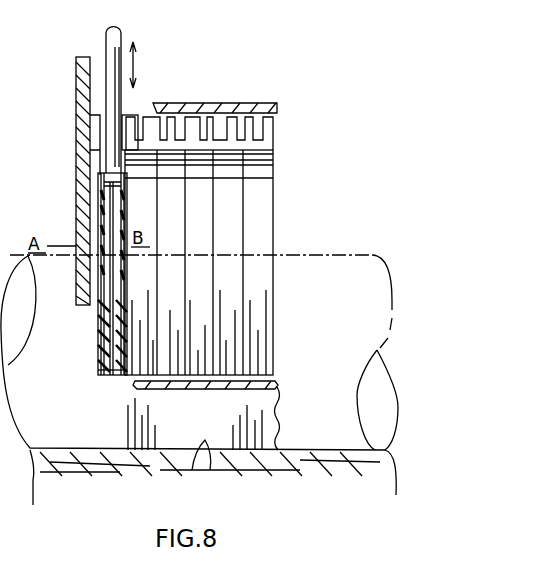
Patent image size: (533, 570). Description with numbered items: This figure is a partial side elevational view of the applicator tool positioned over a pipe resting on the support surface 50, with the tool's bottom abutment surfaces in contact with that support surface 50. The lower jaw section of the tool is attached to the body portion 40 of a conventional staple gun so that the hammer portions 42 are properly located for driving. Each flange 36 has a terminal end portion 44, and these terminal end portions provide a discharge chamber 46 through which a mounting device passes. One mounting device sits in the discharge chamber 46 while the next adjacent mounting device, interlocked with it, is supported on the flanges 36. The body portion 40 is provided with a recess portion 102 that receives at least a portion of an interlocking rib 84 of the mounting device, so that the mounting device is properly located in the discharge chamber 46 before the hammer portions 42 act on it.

The body portion 40 is at (76, 82).
The hammer portions 42 is at (122, 35).
The recess portion 102 is at (98, 184).
The rib 84 is at (98, 336).
The flange 36 is at (234, 386).
The terminal end portion 44 is at (136, 392).
The discharge chamber 46 is at (103, 386).
The support surface 50 is at (208, 452).